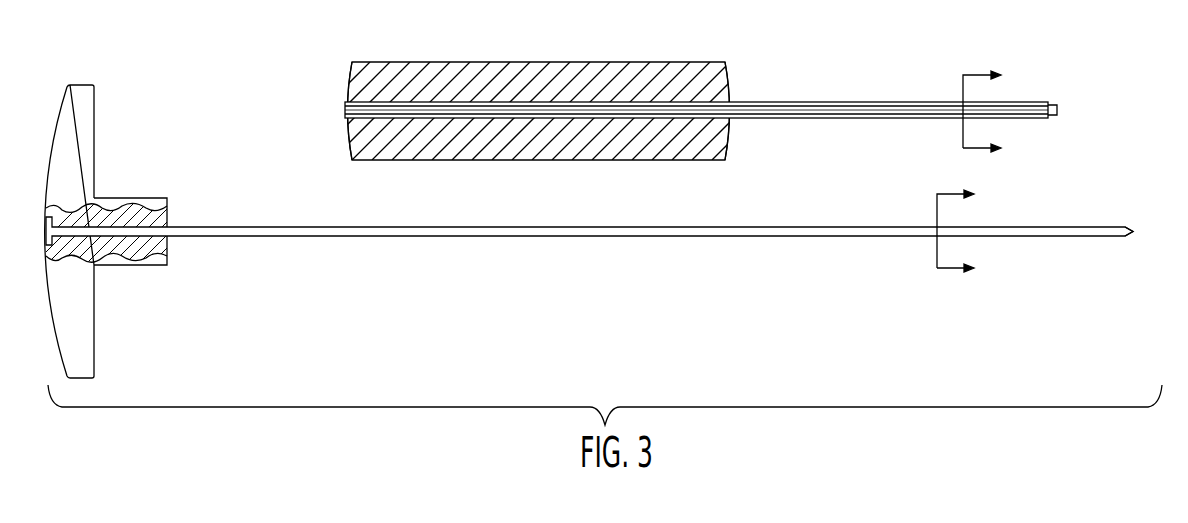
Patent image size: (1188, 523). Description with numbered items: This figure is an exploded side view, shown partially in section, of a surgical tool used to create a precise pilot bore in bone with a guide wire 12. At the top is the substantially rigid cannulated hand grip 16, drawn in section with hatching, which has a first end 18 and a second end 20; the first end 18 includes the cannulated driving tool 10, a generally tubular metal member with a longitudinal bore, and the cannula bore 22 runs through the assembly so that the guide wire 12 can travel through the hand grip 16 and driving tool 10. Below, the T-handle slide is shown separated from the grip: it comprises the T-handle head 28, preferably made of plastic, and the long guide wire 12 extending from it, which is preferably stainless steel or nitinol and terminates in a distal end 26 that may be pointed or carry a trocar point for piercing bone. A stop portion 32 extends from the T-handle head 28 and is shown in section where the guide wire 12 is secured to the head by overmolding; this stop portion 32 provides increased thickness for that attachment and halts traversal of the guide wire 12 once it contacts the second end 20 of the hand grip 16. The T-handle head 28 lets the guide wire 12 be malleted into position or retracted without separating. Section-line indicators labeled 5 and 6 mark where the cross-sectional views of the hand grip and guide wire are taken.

The driving tool 10 is at (883, 100).
The guide wire 12 is at (858, 227).
The hand grip 16 is at (582, 65).
The first end 18 is at (730, 65).
The second end 20 is at (350, 62).
The cannula bore 22 is at (472, 113).
The distal end 26 is at (1128, 238).
The T-handle head 28 is at (86, 155).
The stop portion 32 is at (137, 267).
The section line 5- 5 is at (989, 109).
The section line 6- 6 is at (963, 231).